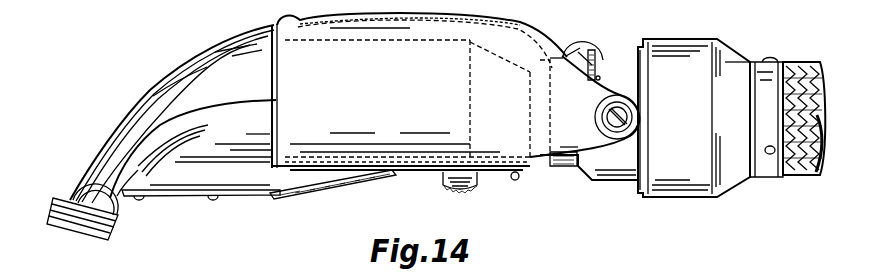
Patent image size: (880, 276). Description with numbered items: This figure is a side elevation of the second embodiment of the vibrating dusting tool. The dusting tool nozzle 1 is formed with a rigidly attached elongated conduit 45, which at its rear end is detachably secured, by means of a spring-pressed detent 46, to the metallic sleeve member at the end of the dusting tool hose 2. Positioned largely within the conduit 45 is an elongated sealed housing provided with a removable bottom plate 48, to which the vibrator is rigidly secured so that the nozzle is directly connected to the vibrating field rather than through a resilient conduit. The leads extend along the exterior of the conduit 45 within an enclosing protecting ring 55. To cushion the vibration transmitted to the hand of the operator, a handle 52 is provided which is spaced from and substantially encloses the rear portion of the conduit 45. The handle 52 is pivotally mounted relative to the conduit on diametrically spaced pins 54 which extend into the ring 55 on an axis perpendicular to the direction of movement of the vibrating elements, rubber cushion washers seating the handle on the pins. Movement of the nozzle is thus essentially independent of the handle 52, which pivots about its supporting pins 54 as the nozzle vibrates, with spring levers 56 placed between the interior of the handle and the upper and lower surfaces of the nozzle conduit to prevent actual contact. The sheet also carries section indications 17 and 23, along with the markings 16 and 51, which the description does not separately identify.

The dusting tool nozzle 1 is at (82, 152).
The dusting tool hose 2 is at (795, 63).
The handle body 16 is at (697, 198).
The section line 17- 17 is at (541, 213).
The section line 23- 23 is at (570, 100).
The elongated conduit 45 is at (226, 96).
The spring-pressed detent 46 is at (590, 44).
The removable bottom plate 48 is at (288, 192).
The knob 51 is at (448, 186).
The handle 52 is at (419, 96).
The pins 54 is at (618, 128).
The protecting ring 55 is at (606, 182).
The spring levers 56 is at (368, 17).